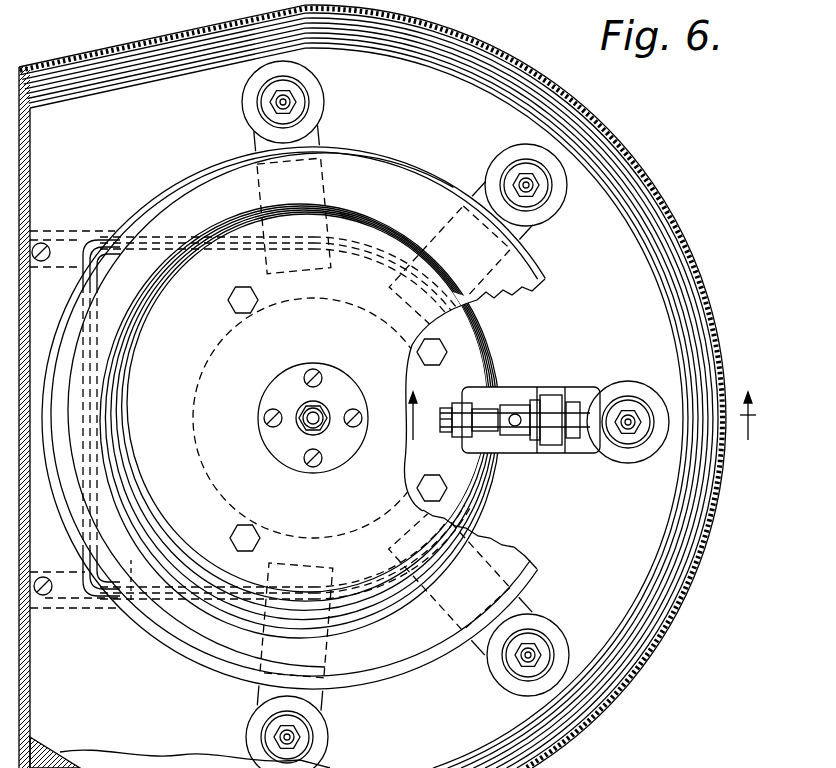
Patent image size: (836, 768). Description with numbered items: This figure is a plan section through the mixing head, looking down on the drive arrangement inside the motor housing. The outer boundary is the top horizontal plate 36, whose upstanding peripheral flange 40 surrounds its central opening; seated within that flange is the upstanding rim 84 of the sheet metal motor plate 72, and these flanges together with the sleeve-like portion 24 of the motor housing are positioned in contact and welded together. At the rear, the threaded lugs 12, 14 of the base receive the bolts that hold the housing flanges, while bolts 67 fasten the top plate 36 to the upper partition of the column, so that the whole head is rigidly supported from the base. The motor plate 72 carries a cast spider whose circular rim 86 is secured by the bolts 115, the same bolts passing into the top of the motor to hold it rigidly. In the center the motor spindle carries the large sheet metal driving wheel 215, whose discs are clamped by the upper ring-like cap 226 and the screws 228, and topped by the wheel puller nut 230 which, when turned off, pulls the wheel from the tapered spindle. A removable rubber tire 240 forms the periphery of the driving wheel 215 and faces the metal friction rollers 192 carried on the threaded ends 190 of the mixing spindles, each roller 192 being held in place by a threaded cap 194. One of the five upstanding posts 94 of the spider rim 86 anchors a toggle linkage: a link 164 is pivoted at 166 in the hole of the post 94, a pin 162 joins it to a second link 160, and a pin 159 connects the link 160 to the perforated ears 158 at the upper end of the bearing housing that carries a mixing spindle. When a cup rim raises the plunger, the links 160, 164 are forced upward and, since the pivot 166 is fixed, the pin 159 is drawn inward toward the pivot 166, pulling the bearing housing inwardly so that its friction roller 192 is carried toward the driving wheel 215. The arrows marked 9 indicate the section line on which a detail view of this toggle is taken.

The top horizontal plate 36 is at (630, 258).
The threaded lug 12 is at (87, 236).
The threaded lug 14 is at (78, 600).
The motor plate 72 is at (131, 600).
The bolt 67 is at (43, 243).
The upstanding peripheral flange 40 is at (173, 236).
The upstanding integral rim 84 is at (128, 511).
The circular rim 86 is at (468, 478).
The sleeve-like portion 24 is at (484, 333).
The driving wheel 215 is at (396, 176).
The rubber tire 240 is at (520, 252).
The bolt 115 is at (252, 308).
The ring-like cap 226 is at (296, 380).
The bolt 228 is at (303, 378).
The wheel puller nut 230 is at (330, 403).
The perforated ears 158 is at (590, 392).
The upstanding post 94 is at (478, 416).
The pivot 166 is at (462, 406).
The link 164 is at (476, 433).
The pin 162 is at (523, 392).
The link 160 is at (538, 430).
The pin 159 is at (578, 394).
The section line 9- 9 is at (581, 433).
The friction roller 192 is at (318, 113).
The threaded upper end 190 is at (272, 102).
The cap 194 is at (300, 98).